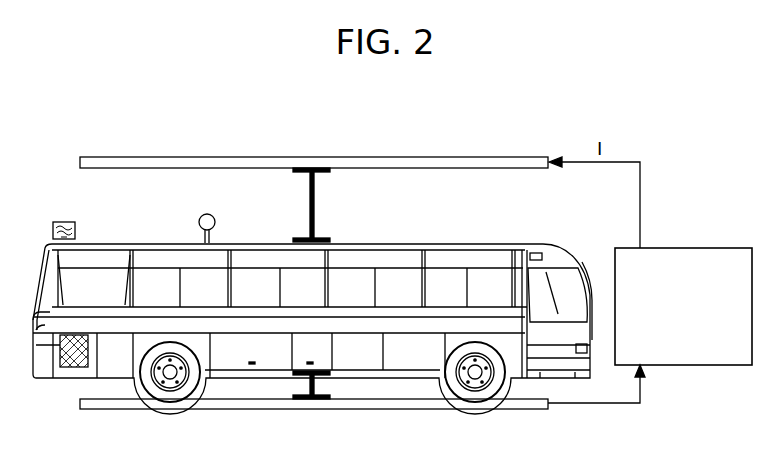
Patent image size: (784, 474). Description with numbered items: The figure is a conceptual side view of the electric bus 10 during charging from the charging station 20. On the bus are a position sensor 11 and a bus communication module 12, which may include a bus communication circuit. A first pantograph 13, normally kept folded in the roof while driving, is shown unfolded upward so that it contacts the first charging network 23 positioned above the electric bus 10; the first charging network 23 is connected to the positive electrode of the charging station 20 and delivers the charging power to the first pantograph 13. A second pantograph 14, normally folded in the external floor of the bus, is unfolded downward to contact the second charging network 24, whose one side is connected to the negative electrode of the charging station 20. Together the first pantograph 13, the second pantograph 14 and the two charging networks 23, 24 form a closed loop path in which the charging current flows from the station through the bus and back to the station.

The electric bus 10 is at (40, 258).
The position sensor 11 is at (200, 216).
The bus communication module 12 is at (64, 221).
The first pantograph 13 is at (314, 205).
The second pantograph 14 is at (316, 388).
The charging station 20 is at (696, 247).
The first charging network 23 is at (150, 158).
The second charging network 24 is at (238, 410).